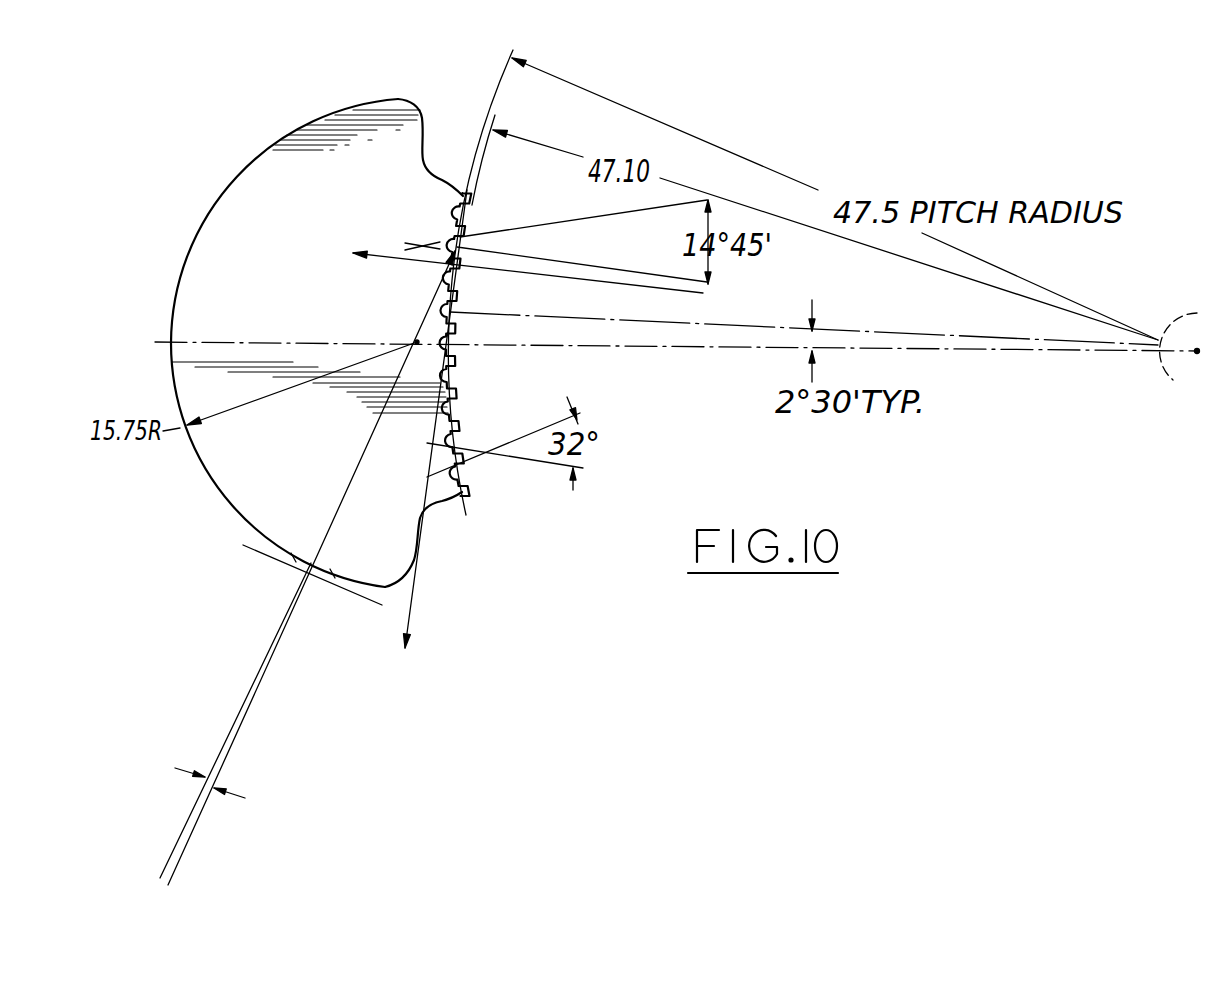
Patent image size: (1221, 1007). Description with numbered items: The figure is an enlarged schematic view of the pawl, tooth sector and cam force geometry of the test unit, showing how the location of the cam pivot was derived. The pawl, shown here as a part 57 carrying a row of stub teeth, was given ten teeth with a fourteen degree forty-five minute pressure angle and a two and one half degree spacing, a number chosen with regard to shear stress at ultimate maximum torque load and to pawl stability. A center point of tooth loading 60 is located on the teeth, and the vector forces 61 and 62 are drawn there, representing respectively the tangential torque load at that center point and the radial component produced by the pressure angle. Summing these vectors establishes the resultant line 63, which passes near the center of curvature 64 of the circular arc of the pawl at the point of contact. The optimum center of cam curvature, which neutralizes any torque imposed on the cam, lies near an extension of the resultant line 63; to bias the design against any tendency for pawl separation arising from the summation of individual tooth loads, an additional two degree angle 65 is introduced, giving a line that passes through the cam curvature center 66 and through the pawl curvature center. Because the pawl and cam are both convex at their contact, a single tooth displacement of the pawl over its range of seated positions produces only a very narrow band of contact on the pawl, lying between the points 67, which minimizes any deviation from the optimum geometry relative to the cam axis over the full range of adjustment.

The cam body 57 is at (222, 511).
The center point of tooth loading 60 is at (458, 266).
The vector force (tangential torque load) 61 is at (418, 518).
The vector force (radial component) 62 is at (396, 258).
The resultant line 63 is at (368, 448).
The center of curvature 64 is at (416, 341).
The additional angle 65 is at (190, 764).
The cam curvature center 66 is at (164, 881).
The points (band of contact) 67 is at (294, 557).